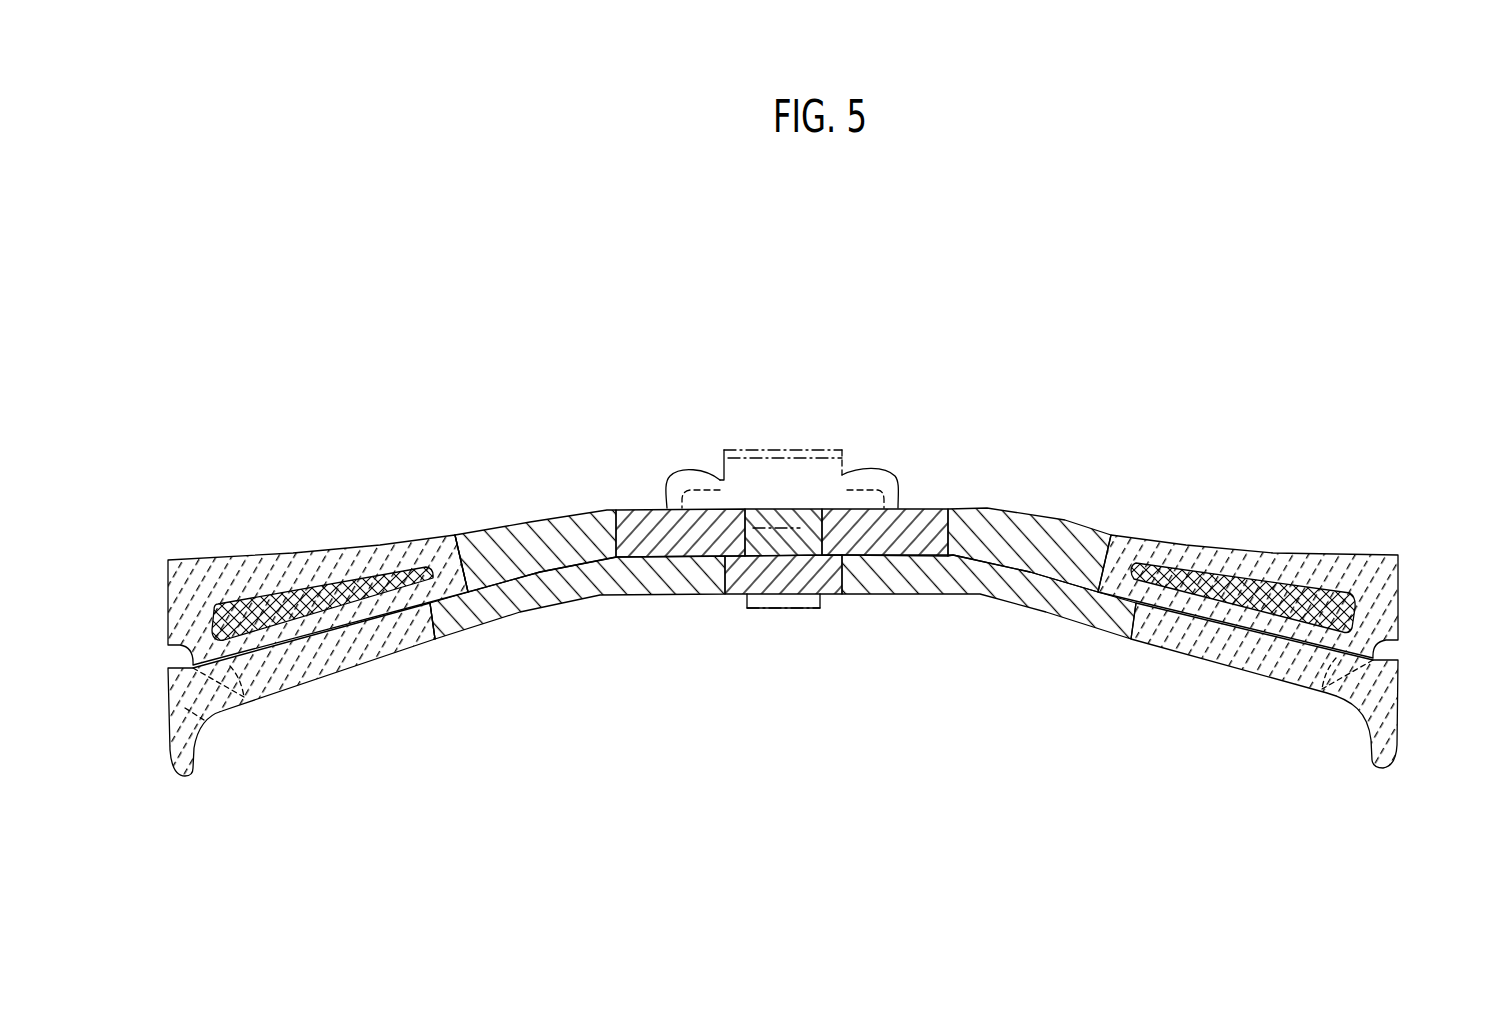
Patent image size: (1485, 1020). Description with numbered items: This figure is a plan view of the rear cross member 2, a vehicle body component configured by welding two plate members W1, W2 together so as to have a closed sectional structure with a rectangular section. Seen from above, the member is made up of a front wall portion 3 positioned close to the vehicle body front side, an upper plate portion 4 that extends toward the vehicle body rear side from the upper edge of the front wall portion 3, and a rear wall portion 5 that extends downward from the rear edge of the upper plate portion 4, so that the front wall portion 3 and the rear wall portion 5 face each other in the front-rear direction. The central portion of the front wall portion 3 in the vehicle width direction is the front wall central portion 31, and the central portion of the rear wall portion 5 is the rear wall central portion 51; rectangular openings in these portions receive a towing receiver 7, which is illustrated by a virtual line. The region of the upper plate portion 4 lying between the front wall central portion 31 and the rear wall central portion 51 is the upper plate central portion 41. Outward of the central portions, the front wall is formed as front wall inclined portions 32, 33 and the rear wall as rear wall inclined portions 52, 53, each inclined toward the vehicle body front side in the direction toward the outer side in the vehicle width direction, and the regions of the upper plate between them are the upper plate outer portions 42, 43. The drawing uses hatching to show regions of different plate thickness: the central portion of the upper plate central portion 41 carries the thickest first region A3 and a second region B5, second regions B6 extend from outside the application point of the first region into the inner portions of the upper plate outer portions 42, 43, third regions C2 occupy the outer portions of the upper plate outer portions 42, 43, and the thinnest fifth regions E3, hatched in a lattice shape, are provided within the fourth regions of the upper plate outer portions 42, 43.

The rear cross member 2 is at (311, 447).
The front wall portion 3 is at (602, 598).
The upper plate portion 4 is at (1067, 592).
The rear wall portion 5 is at (541, 518).
The towing receiver 7 is at (783, 450).
The front wall central portion 31 is at (667, 596).
The front wall inclined portion 32 is at (1180, 653).
The front wall inclined portion 33 is at (362, 668).
The upper plate central portion 41 is at (867, 574).
The upper plate outer portion 42 is at (1268, 658).
The upper plate outer portion 43 is at (300, 668).
The rear wall central portion 51 is at (931, 508).
The rear wall inclined portion 52 is at (1195, 543).
The rear wall inclined portion 53 is at (368, 549).
The first region A3 is at (785, 595).
The second region B5 is at (772, 508).
The second region B6 is at (523, 553).
The third region C2 is at (185, 708).
The fifth region E3 is at (258, 600).
The plate member W1 is at (458, 640).
The plate member W2 is at (470, 532).